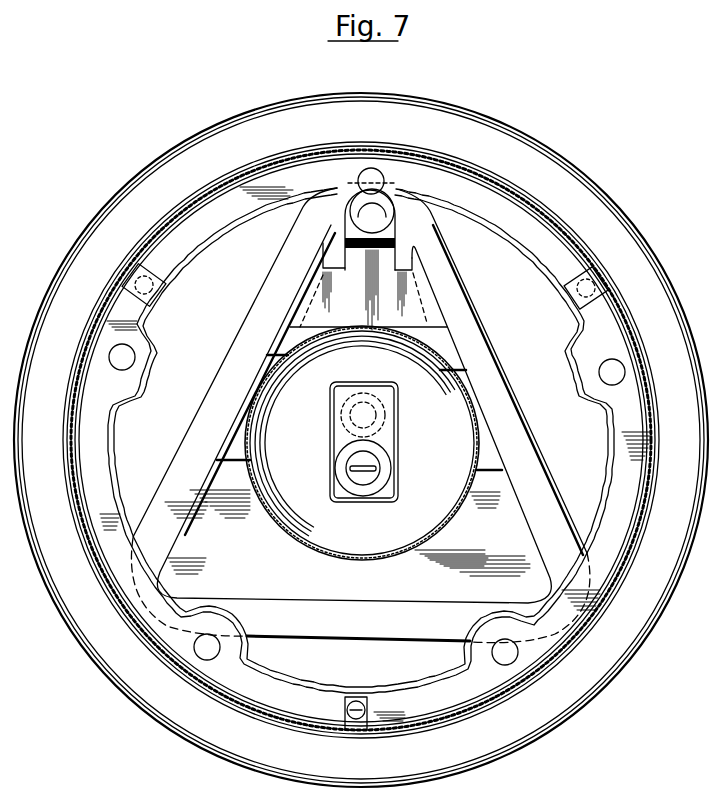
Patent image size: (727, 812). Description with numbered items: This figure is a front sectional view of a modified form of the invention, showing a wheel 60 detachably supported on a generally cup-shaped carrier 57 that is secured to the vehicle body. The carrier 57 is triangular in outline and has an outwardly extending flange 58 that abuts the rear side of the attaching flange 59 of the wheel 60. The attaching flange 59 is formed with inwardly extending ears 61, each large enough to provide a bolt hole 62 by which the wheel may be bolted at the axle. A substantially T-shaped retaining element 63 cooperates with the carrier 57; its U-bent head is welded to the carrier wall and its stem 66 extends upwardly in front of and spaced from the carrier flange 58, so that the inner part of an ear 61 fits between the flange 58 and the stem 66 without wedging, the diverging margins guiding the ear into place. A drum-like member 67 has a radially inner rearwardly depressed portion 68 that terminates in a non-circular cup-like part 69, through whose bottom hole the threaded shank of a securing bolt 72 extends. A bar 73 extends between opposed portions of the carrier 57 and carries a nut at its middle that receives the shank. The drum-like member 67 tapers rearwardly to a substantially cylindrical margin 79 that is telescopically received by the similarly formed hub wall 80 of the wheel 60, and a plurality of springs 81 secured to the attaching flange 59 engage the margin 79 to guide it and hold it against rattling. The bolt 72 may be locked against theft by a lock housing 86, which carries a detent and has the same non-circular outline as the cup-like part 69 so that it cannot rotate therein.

The wheel 60 is at (256, 110).
The hub wall 80 is at (361, 440).
The substantially cylindrical margin 79 is at (528, 199).
The bolt holes 62 is at (358, 179).
The stem 66 is at (375, 212).
The ears 61 is at (361, 440).
The retaining element 63 is at (410, 273).
The drum-like member 67 is at (576, 229).
The springs 81 is at (150, 272).
The outwardly extending flange 58 is at (203, 420).
The carrier 57 is at (500, 357).
The attaching flange 59 is at (361, 440).
The securing bolt 72 is at (385, 410).
The lock housing 86 is at (392, 445).
The bar 73 is at (233, 463).
The cup-like part 69 is at (384, 456).
The rearwardly depressed portion 68 is at (284, 536).